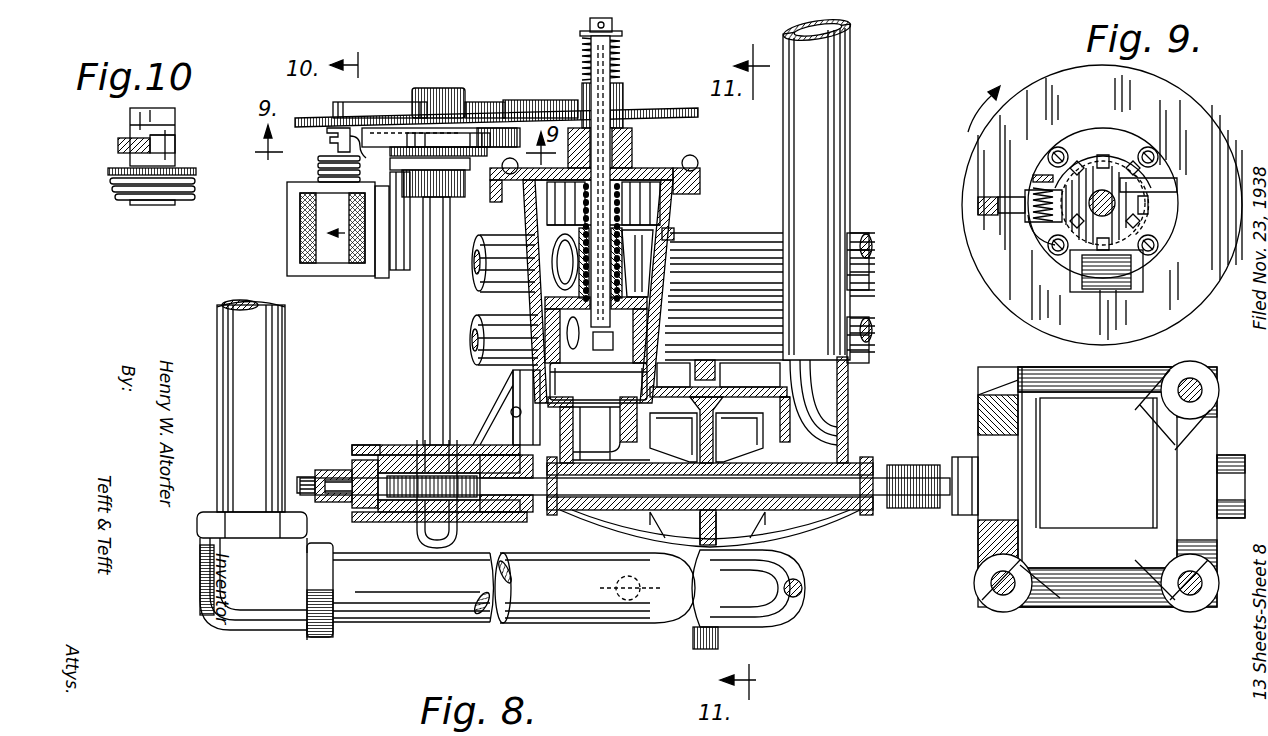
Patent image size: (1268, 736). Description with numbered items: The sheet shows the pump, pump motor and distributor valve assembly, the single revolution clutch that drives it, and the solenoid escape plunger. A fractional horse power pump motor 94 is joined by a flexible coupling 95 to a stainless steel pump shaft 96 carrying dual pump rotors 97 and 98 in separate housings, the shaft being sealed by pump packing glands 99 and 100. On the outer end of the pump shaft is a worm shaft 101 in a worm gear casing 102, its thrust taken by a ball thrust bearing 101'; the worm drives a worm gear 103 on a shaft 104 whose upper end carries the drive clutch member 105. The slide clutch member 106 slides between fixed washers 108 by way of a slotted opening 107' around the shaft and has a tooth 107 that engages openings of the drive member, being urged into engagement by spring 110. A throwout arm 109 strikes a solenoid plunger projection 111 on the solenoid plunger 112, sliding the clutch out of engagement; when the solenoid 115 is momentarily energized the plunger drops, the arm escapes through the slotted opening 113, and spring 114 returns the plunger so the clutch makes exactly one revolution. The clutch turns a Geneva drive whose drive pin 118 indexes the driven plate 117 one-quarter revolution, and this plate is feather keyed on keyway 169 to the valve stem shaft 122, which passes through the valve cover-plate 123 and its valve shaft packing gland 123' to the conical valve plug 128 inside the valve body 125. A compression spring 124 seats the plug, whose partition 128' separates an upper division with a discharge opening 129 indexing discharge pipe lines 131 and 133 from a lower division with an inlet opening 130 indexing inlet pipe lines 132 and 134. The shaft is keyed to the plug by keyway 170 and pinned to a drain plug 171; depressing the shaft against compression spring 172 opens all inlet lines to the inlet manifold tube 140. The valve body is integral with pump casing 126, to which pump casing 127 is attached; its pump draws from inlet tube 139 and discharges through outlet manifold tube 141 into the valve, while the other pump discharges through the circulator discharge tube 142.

In FIG. 8, the pump motor 94 is at (1118, 608).
In FIG. 8, the flexible coupling 95 is at (912, 466).
In FIG. 8, the pump shaft 96 is at (888, 497).
In FIG. 8, the pump rotor 97 is at (739, 437).
In FIG. 8, the pump rotor 98 is at (673, 437).
In FIG. 8, the pump packing gland 99 is at (866, 478).
In FIG. 8, the pump packing gland 100 is at (545, 525).
In FIG. 8, the worm shaft 101 is at (442, 497).
In FIG. 8, the ball thrust bearing 101' is at (339, 452).
In FIG. 8, the worm gear casing 102 is at (395, 522).
In FIG. 8, the worm gear 103 is at (402, 470).
In FIG. 9, the shaft 104 is at (1118, 200).
In FIG. 8, the shaft 104 is at (423, 326).
In FIG. 8, the drive clutch member 105 is at (458, 175).
In FIG. 9, the slide clutch member 106 is at (1130, 300).
In FIG. 9, the tooth 107 is at (1105, 287).
In FIG. 9, the slotted opening 107' is at (1175, 208).
In FIG. 9, the fixed washers 108 is at (1052, 150).
In FIG. 10, the throwout arm 109 is at (118, 145).
In FIG. 9, the throwout arm 109 is at (1035, 240).
In FIG. 8, the throwout arm 109 is at (362, 152).
In FIG. 9, the spring 110 is at (1040, 178).
In FIG. 10, the solenoid plunger projection 111 is at (175, 144).
In FIG. 9, the solenoid plunger projection 111 is at (1000, 214).
In FIG. 10, the solenoid plunger 112 is at (152, 110).
In FIG. 9, the solenoid plunger 112 is at (978, 206).
In FIG. 10, the slotted opening 113 is at (168, 128).
In FIG. 8, the slotted opening 113 is at (330, 137).
In FIG. 10, the spring 114 is at (115, 195).
In FIG. 8, the spring 114 is at (318, 172).
In FIG. 8, the solenoid 115 is at (300, 238).
In FIG. 8, the driven plate 117 is at (645, 112).
In FIG. 8, the drive pin 118 is at (500, 88).
In FIG. 8, the shaft 122 is at (612, 26).
In FIG. 8, the valve cover-plate 123 is at (610, 175).
In FIG. 8, the valve shaft packing gland 123' is at (625, 144).
In FIG. 8, the compression spring 124 is at (620, 226).
In FIG. 8, the valve body 125 is at (676, 236).
In FIG. 8, the pump casing 126 is at (718, 378).
In FIG. 8, the pump casing 127 is at (755, 402).
In FIG. 8, the conical valve plug 128 is at (769, 261).
In FIG. 8, the partition 128' is at (767, 306).
In FIG. 8, the valve seat discharge opening 129 is at (530, 236).
In FIG. 8, the inlet opening 130 is at (590, 340).
In FIG. 8, the discharge pipe line 131 is at (866, 236).
In FIG. 8, the inlet pipe line 132 is at (870, 347).
In FIG. 8, the discharge pipe line 133 is at (472, 280).
In FIG. 8, the inlet pipe line 134 is at (470, 346).
In FIG. 8, the inlet tube 139 is at (852, 158).
In FIG. 8, the inlet manifold tube 140 is at (599, 430).
In FIG. 8, the outlet manifold tube 141 is at (770, 598).
In FIG. 8, the circulator discharge tube 142 is at (548, 622).
In FIG. 8, the keyway 169 is at (592, 64).
In FIG. 8, the keyway 170 is at (595, 258).
In FIG. 8, the drain plug 171 is at (662, 348).
In FIG. 8, the compression spring 172 is at (620, 60).